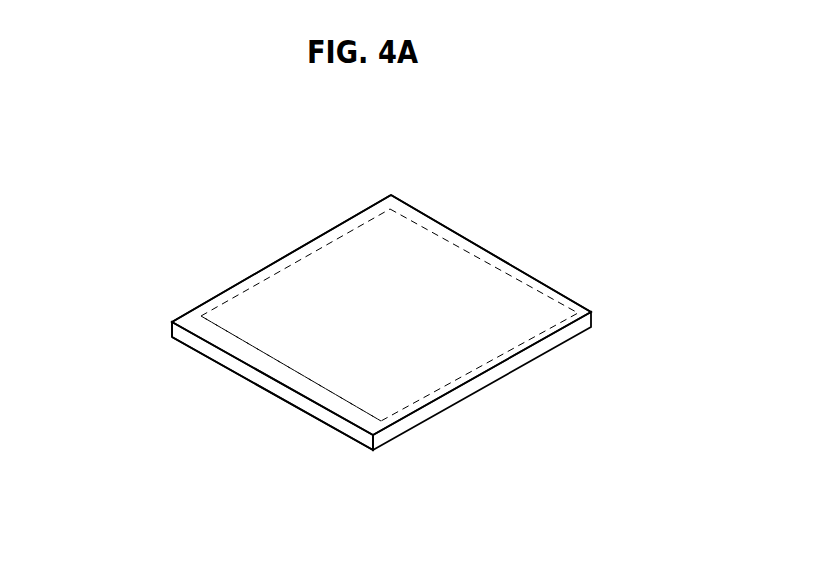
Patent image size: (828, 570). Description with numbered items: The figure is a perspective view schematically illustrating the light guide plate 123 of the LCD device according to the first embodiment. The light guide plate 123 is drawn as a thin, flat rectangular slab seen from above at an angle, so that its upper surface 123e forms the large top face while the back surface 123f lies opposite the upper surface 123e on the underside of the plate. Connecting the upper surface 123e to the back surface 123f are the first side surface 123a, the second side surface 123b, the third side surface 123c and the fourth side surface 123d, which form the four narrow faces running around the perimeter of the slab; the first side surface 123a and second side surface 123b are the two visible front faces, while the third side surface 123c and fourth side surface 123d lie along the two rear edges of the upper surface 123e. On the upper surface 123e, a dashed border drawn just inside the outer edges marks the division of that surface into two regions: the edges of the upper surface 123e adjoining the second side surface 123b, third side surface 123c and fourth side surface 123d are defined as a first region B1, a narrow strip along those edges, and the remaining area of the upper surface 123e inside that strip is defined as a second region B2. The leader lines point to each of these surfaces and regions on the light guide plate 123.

The light guide plate 123 is at (368, 138).
The first side surface 123a is at (502, 378).
The second side surface 123b is at (275, 383).
The third side surface 123c is at (282, 257).
The fourth side surface 123d is at (492, 253).
The upper surface 123e is at (186, 428).
The back surface 123f is at (394, 443).
The first region B1 is at (192, 342).
The second region B2 is at (275, 335).